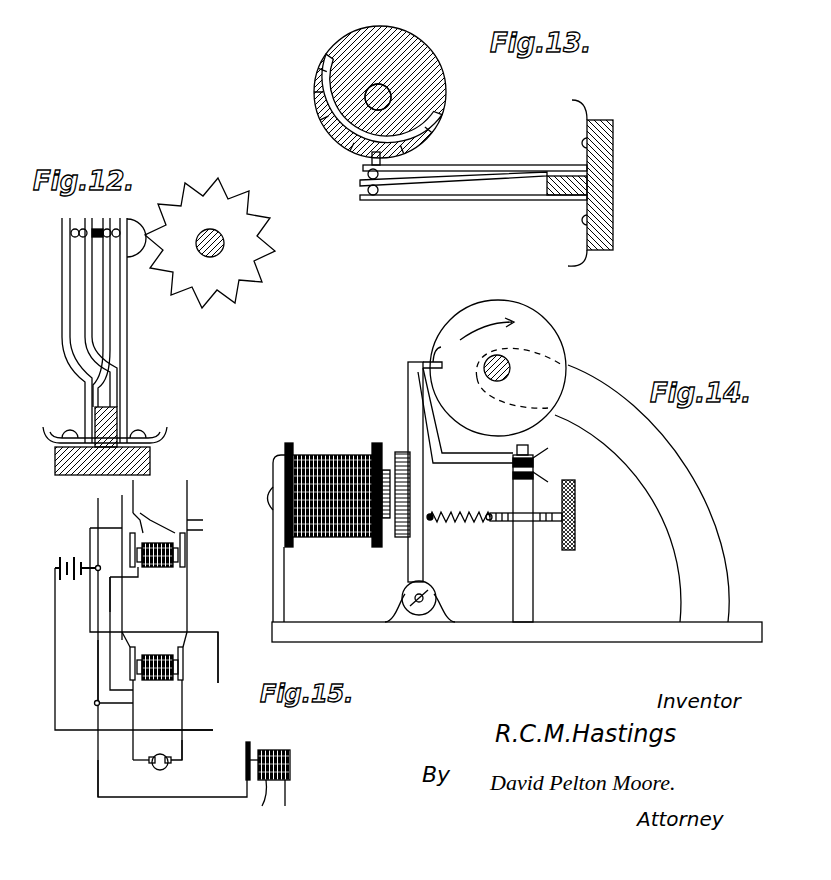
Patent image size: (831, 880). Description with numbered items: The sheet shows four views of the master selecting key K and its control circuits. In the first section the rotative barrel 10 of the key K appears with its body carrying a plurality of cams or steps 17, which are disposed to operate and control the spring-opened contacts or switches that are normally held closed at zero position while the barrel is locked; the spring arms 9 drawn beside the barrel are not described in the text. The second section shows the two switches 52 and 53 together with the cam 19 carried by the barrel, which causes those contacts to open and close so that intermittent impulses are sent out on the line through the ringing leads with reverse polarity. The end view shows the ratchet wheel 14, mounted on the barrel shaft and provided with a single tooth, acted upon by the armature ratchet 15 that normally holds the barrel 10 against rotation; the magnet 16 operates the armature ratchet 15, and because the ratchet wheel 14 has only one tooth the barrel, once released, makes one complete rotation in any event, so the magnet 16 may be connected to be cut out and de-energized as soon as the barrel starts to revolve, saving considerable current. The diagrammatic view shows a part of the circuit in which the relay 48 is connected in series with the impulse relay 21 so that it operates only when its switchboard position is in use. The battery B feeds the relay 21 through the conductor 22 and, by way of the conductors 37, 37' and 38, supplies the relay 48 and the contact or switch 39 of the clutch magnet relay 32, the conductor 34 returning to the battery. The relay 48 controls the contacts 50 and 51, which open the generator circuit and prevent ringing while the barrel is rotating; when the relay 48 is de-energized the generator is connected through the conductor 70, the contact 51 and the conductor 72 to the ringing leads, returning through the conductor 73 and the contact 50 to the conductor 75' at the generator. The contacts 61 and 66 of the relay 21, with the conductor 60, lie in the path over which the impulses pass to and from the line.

In FIG. 13, the rotative barrel 10 is at (362, 33).
In FIG. 13, the cams or steps 17 is at (342, 143).
In FIG. 13, the spring contact arms 9 is at (425, 198).
In FIG. 13, the master selecting key K is at (362, 188).
In FIG. 12, the contact or switch 52 is at (82, 220).
In FIG. 12, the contact or switch 53 is at (113, 222).
In FIG. 12, the cam 19 is at (254, 248).
In FIG. 14, the ratchet wheel 14 is at (553, 333).
In FIG. 14, the armature ratchet 15 is at (410, 362).
In FIG. 14, the clutch controlling magnet 16 is at (322, 455).
In FIG. 15, the battery B is at (78, 555).
In FIG. 15, the conductor 22 is at (136, 494).
In FIG. 15, the contact or switch of relay 21 61 is at (143, 519).
In FIG. 15, the contact of relay 21 66 is at (190, 520).
In FIG. 15, the impulse relay 21 is at (156, 567).
In FIG. 15, the conductor 72 is at (190, 604).
In FIG. 15, the conductor 73 is at (118, 612).
In FIG. 15, the contact of relay 48 50 is at (140, 648).
In FIG. 15, the contact or switch of relay 48 51 is at (190, 648).
In FIG. 15, the relay 48 is at (160, 690).
In FIG. 15, the conductor 60 is at (220, 652).
In FIG. 15, the conductor 37 is at (83, 670).
In FIG. 15, the conductor 37' is at (78, 713).
In FIG. 15, the conductor 34 is at (208, 730).
In FIG. 15, the conductor 70 is at (184, 750).
In FIG. 15, the alternating current source 75' is at (145, 772).
In FIG. 15, the conductor 38 is at (97, 775).
In FIG. 15, the contact or switch of relay 32 39 is at (254, 746).
In FIG. 15, the clutch magnet relay 32 is at (262, 800).